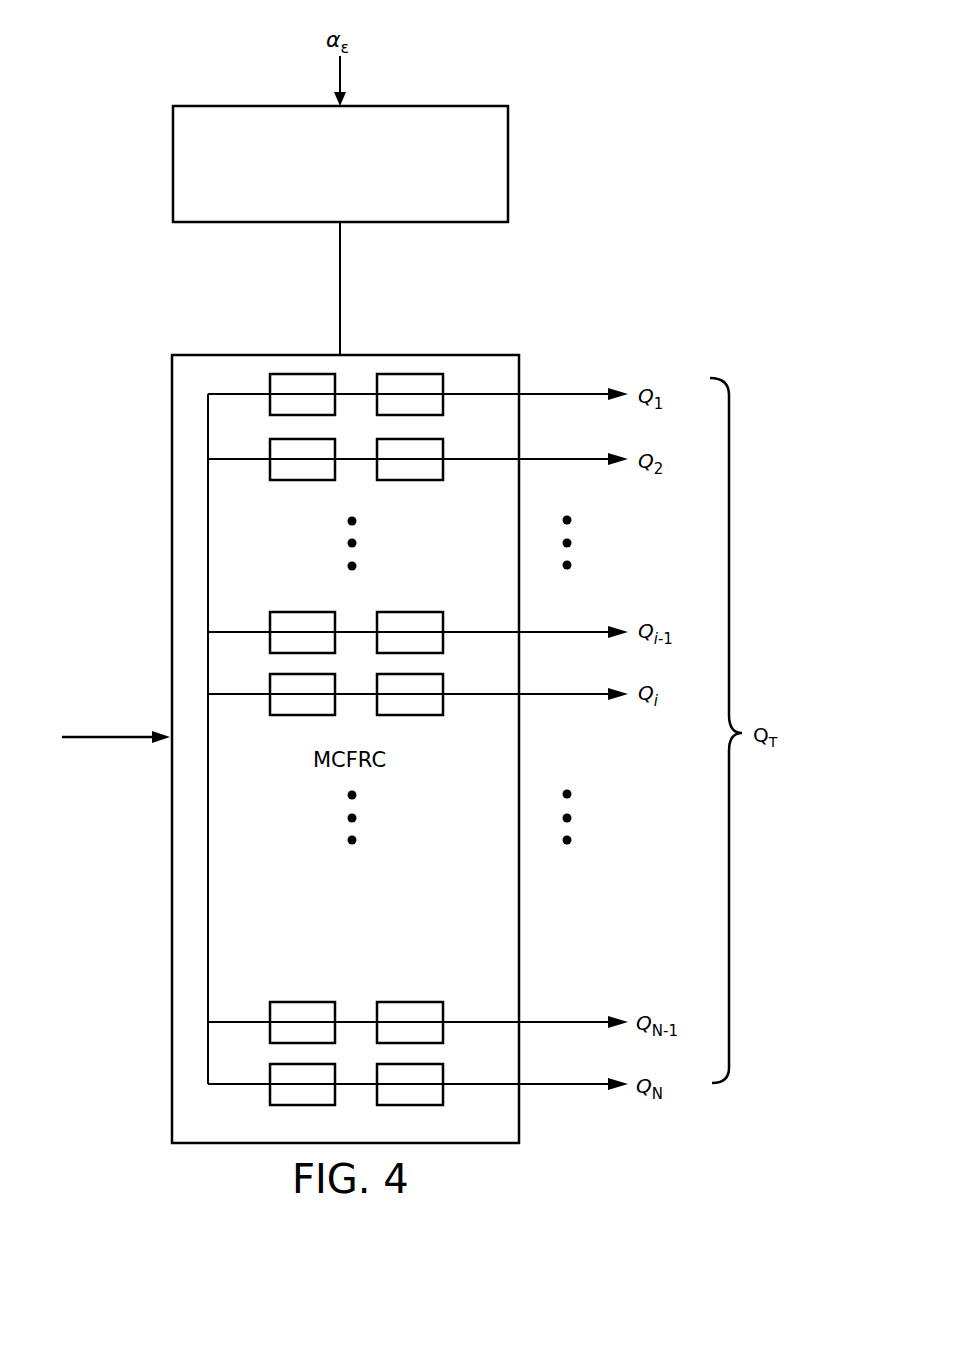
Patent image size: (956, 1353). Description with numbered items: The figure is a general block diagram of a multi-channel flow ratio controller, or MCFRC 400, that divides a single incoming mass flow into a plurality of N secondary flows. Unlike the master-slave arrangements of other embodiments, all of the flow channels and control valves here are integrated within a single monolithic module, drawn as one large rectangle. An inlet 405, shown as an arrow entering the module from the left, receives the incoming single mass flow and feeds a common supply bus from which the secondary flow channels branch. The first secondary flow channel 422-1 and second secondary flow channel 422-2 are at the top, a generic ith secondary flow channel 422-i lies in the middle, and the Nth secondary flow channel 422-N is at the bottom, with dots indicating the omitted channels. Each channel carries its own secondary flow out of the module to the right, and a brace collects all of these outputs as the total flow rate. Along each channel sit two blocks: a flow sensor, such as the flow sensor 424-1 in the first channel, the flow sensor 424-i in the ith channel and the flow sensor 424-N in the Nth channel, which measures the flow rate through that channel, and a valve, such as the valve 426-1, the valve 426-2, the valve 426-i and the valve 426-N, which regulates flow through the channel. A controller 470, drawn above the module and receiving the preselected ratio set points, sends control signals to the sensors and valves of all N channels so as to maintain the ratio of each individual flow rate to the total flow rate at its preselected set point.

The MCFRC 400 is at (250, 1172).
The inlet 405 is at (120, 742).
The controller 470 is at (425, 108).
The secondary flow channel 422-1 is at (235, 396).
The secondary flow channel 422-2 is at (235, 461).
The secondary flow channel 422-i is at (235, 692).
The secondary flow channel 422-N is at (235, 1082).
The flow sensor 424-1 is at (295, 387).
The valve 426-1 is at (408, 387).
The valve 426-2 is at (305, 473).
The flow sensor 424-i is at (305, 708).
The valve 426-i is at (407, 708).
The flow sensor 424-N is at (305, 1097).
The valve 426-N is at (407, 1097).